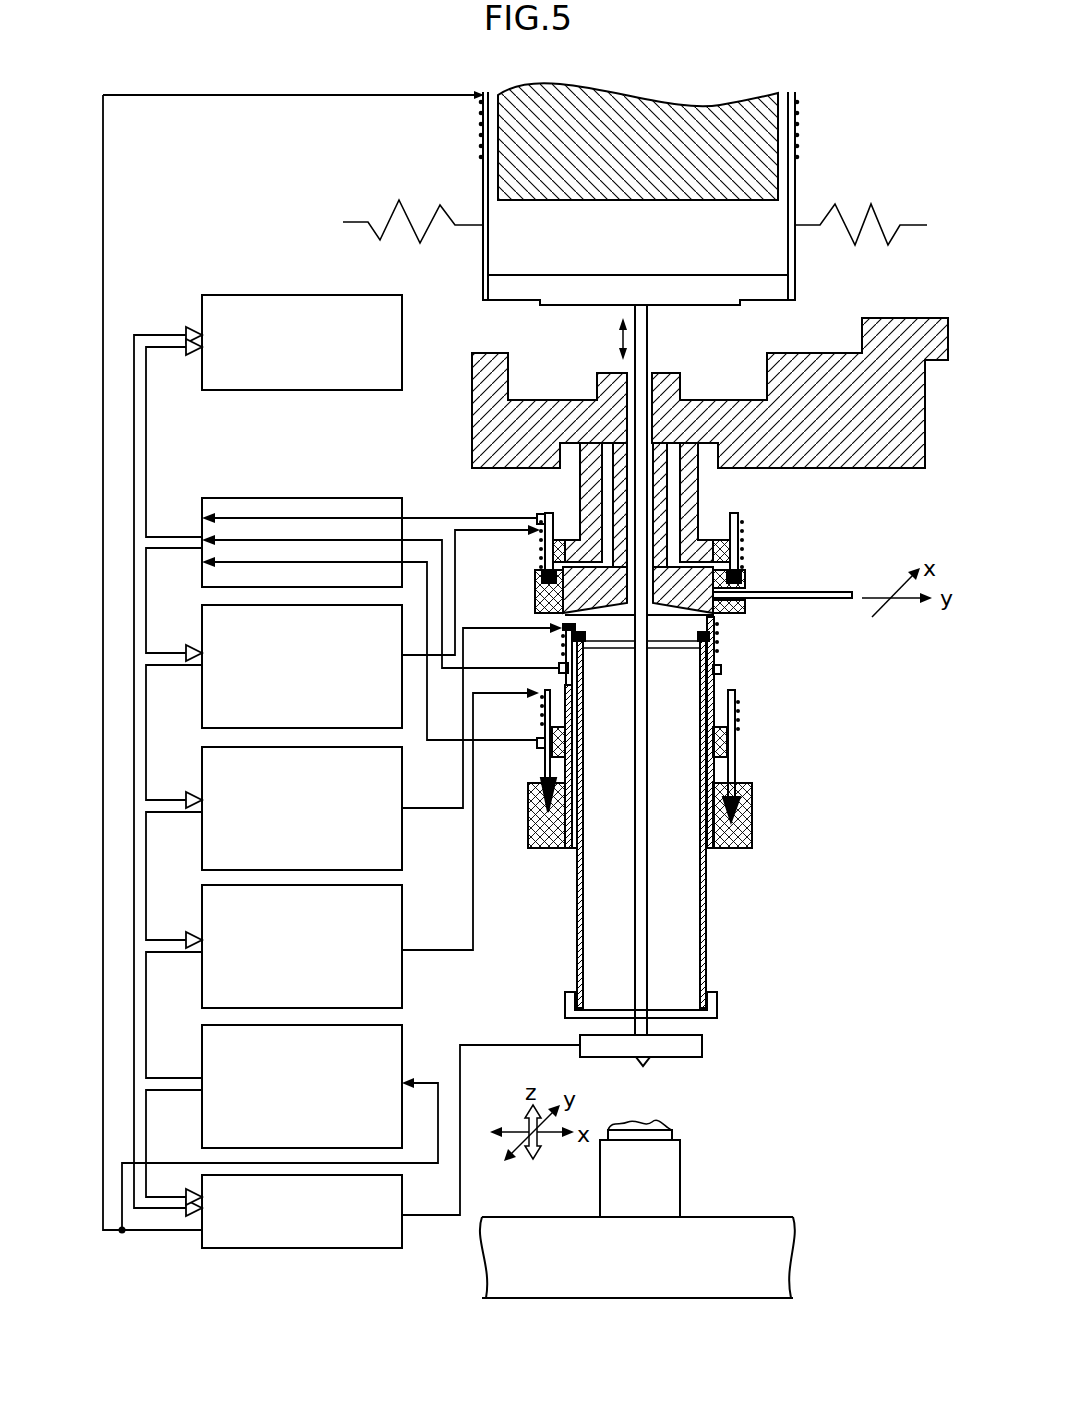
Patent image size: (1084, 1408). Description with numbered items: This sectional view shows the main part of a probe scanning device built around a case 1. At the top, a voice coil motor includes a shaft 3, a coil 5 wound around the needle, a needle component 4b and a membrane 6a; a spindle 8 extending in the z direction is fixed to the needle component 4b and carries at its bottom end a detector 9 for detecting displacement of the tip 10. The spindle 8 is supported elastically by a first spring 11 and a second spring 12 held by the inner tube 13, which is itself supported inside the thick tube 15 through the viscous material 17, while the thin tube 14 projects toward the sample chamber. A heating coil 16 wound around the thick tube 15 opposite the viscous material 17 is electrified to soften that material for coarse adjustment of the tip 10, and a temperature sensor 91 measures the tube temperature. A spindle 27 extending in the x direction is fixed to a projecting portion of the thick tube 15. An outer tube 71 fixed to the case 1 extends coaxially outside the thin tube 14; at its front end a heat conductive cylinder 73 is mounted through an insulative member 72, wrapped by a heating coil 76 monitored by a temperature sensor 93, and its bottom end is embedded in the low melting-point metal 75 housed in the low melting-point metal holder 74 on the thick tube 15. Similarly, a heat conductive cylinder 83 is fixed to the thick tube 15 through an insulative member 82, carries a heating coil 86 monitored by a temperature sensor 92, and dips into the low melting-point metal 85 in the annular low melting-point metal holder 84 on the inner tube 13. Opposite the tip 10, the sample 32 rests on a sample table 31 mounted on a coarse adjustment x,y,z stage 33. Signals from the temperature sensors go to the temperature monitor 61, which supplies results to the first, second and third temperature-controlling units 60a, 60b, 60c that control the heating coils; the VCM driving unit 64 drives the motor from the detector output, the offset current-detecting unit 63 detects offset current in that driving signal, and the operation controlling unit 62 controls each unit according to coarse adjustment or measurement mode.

The case 1 is at (490, 415).
The shaft 3 is at (710, 125).
The needle component 4b is at (510, 292).
The coil 5 is at (478, 113).
The membrane 6a is at (395, 210).
The spindle 8 is at (648, 330).
The detector 9 is at (702, 1045).
The tip 10 is at (648, 1062).
The first spring 11 is at (603, 648).
The second spring 12 is at (682, 1014).
The inner tube 13 is at (707, 945).
The thin tube 14 is at (657, 482).
The thick tube 15 is at (721, 668).
The heating coil 16 is at (720, 640).
The viscous material 17 is at (708, 690).
The spindle 27 is at (800, 592).
The sample table 31 is at (672, 1136).
The sample 32 is at (672, 1125).
The coarse adjustment x,y,z stage 33 is at (615, 1180).
The first temperature-controlling unit 60a is at (197, 690).
The second temperature-controlling unit 60b is at (197, 832).
The third temperature-controlling unit 60c is at (197, 978).
The temperature monitor 61 is at (350, 498).
The operation controlling unit 62 is at (350, 296).
The offset current-detecting unit 63 is at (197, 1098).
The VCM driving unit 64 is at (362, 1250).
The outer tube 71 is at (688, 505).
The insulative member 72 is at (565, 540).
The heat conductive cylinder 73 is at (542, 572).
The low melting-point metal holder 74 is at (535, 595).
The low melting-point metal 75 is at (741, 566).
The heating coil 76 is at (546, 545).
The insulative member 82 is at (728, 760).
The heat conductive cylinder 83 is at (736, 740).
The low melting-point metal holder 84 is at (735, 848).
The low melting-point metal 85 is at (745, 790).
The heating coil 86 is at (740, 705).
The temperature sensor 91 is at (559, 668).
The temperature sensor 92 is at (537, 742).
The temperature sensor 93 is at (538, 514).